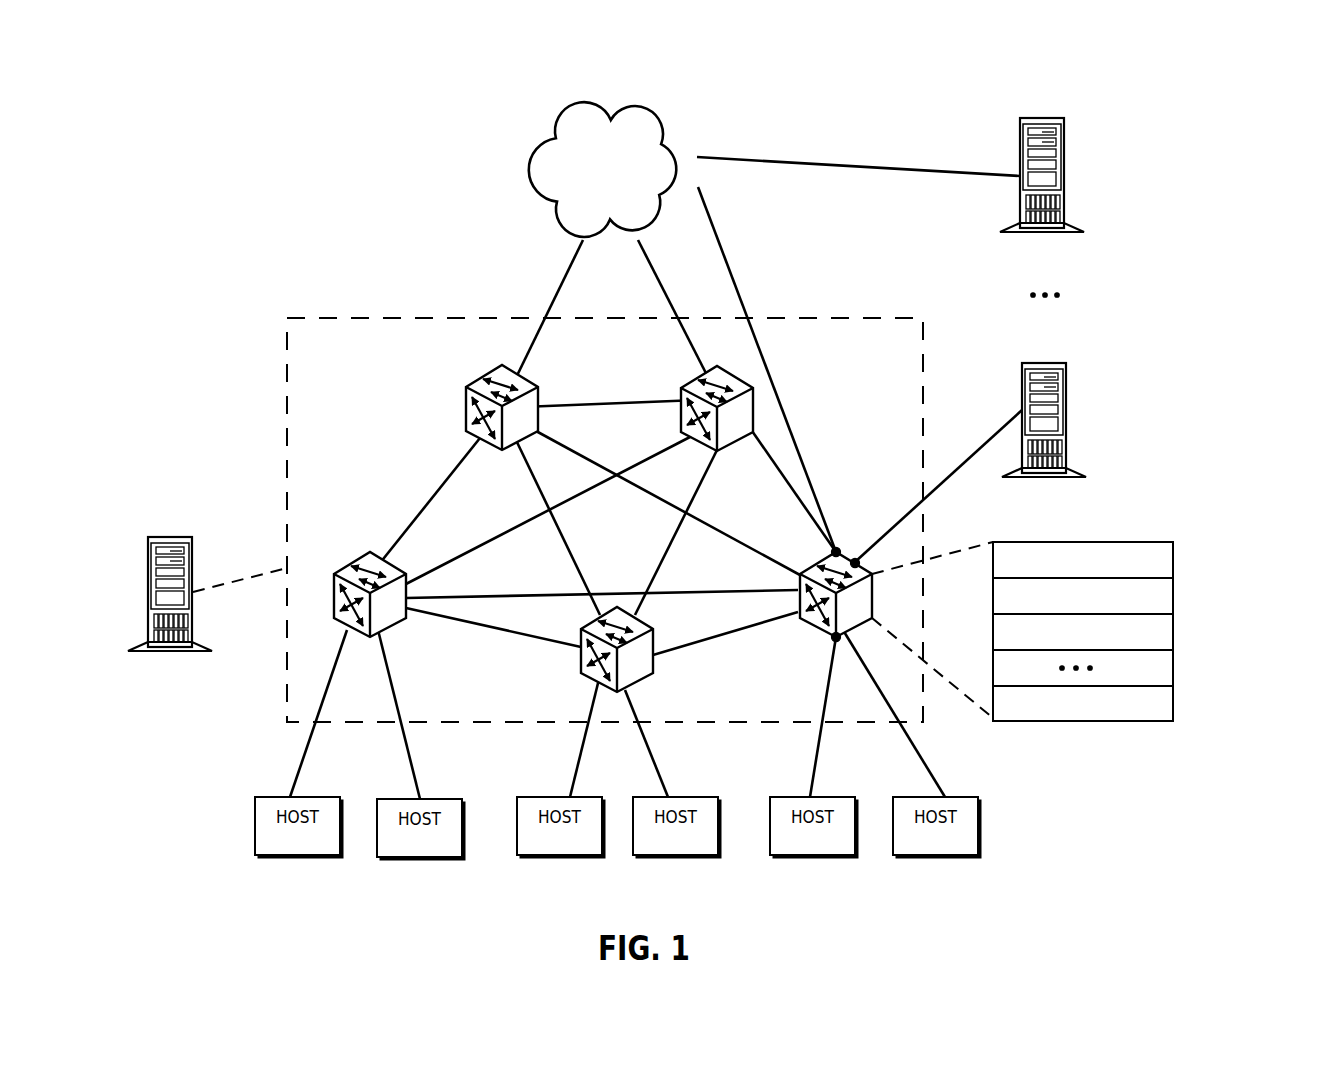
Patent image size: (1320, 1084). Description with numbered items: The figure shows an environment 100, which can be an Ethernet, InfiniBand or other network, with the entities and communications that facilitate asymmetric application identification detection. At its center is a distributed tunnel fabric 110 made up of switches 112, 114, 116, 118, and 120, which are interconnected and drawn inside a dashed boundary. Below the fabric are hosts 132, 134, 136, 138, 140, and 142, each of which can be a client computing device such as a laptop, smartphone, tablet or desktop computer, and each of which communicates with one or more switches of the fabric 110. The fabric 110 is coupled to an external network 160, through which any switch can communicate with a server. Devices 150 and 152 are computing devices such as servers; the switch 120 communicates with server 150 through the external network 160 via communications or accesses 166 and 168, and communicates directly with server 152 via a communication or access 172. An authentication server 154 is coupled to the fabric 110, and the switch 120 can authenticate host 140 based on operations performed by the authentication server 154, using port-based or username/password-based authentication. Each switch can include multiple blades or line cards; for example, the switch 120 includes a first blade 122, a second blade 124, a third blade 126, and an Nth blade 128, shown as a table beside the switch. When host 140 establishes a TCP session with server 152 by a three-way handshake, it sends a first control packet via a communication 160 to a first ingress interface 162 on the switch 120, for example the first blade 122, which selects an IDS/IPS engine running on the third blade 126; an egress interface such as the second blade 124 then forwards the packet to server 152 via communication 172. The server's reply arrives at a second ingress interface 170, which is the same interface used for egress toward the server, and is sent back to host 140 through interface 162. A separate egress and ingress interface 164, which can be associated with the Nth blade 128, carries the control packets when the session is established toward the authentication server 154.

The environment 100 is at (1232, 66).
The distributed tunnel fabric 110 is at (287, 330).
The switch 112 is at (468, 386).
The switch 114 is at (683, 386).
The switch 116 is at (387, 630).
The switch 118 is at (640, 667).
The switch 120 is at (800, 617).
The blade_1 122 is at (1103, 570).
The blade_2 124 is at (1103, 606).
The blade_3 126 is at (1103, 642).
The blade_N 128 is at (1105, 713).
The host 132 is at (284, 848).
The host 134 is at (406, 850).
The host 136 is at (546, 848).
The host 138 is at (662, 848).
The host 140 is at (826, 848).
The host 142 is at (922, 848).
The device 150 is at (1066, 172).
The device 152 is at (1068, 415).
The authentication server 154 is at (170, 654).
The external network 160 is at (623, 203).
The first ingress interface 162 is at (837, 641).
The egress and ingress interface 164 is at (838, 550).
The communication or access 166 is at (803, 457).
The communication or access 168 is at (856, 160).
The second ingress interface 170 is at (858, 563).
The communication or access 172 is at (942, 490).